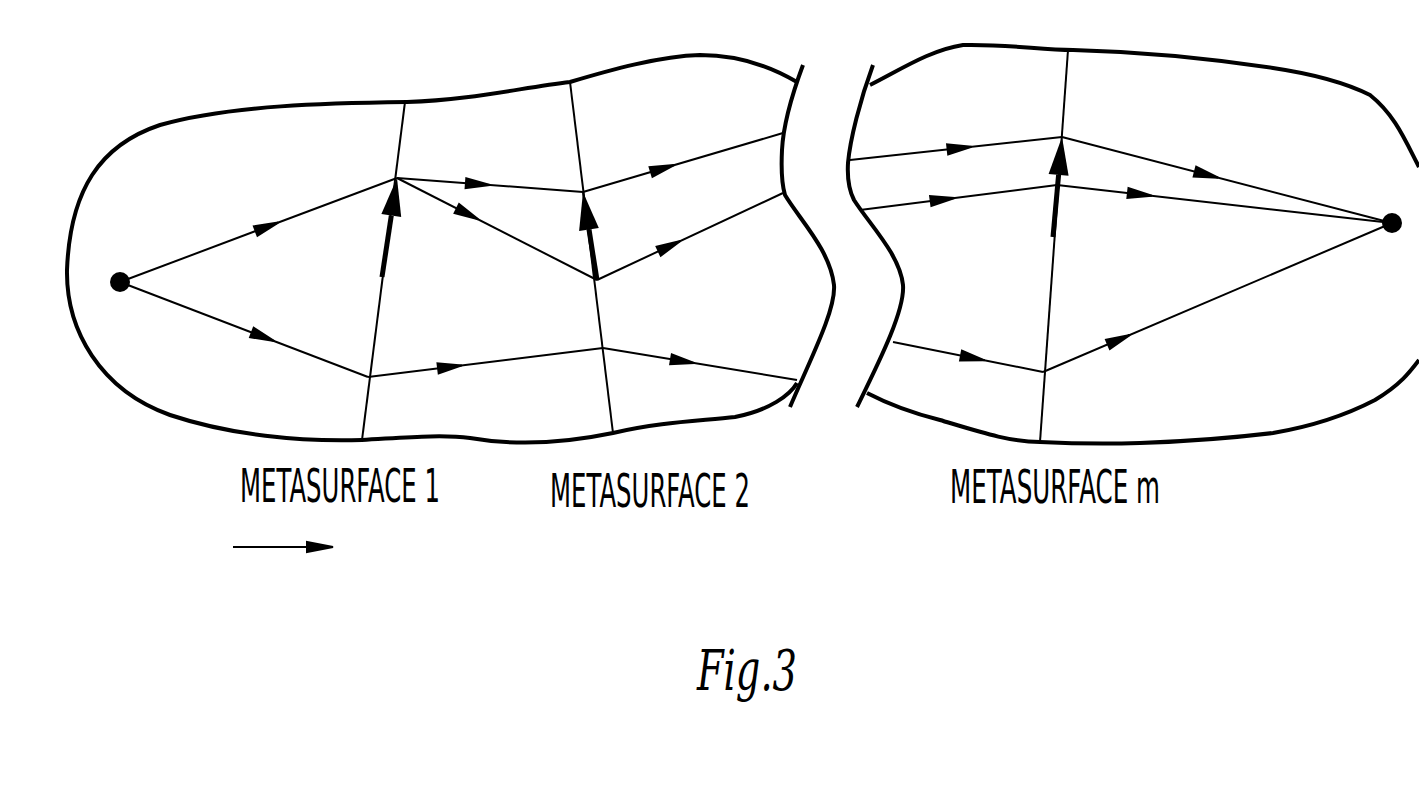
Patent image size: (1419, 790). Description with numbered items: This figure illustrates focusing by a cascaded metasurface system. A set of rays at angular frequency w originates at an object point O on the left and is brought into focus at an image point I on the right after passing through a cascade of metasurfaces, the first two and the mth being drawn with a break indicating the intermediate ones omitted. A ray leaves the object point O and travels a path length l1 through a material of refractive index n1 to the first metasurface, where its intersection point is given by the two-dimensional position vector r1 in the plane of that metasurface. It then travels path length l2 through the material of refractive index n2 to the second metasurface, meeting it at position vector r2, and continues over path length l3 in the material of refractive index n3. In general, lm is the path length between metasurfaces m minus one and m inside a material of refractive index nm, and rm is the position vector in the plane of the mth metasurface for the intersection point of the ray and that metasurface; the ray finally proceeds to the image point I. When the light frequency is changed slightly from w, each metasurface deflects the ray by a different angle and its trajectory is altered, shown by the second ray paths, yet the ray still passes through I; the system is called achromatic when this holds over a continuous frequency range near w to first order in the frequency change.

The object point O is at (120, 255).
The image point I is at (1392, 199).
The path length l1 is at (258, 224).
The path length l2 is at (490, 160).
The path length l3 is at (683, 149).
The path length lm is at (956, 129).
The refractive index n1 is at (244, 358).
The refractive index n2 is at (485, 391).
The refractive index n3 is at (700, 384).
The refractive index nm is at (968, 390).
The position vector r1 is at (372, 227).
The position vector r2 is at (608, 236).
The position vector rm is at (1079, 190).
The angular frequency w is at (567, 213).